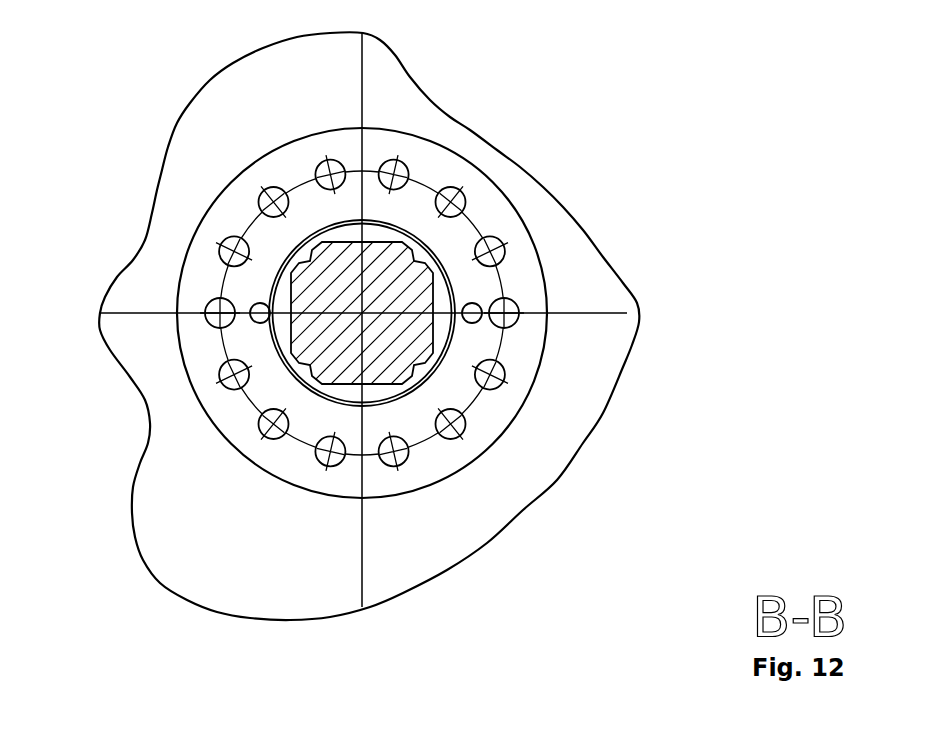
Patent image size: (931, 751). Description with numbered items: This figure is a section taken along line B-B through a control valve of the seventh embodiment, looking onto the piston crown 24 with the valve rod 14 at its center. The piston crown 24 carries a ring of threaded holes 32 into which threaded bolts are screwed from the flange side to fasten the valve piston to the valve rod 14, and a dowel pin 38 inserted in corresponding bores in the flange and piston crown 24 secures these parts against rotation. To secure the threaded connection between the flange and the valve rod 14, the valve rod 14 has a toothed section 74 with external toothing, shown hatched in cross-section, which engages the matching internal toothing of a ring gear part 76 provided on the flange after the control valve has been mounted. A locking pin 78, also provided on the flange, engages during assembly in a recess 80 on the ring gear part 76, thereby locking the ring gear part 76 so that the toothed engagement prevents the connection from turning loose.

The valve rod 14 is at (385, 243).
The piston crown 24 is at (567, 252).
The threaded hole 32 is at (465, 189).
The dowel pin 38 is at (462, 310).
The toothed section 74 is at (387, 350).
The ring gear part 76 is at (308, 247).
The locking pin 78 is at (251, 313).
The recess 80 is at (274, 325).